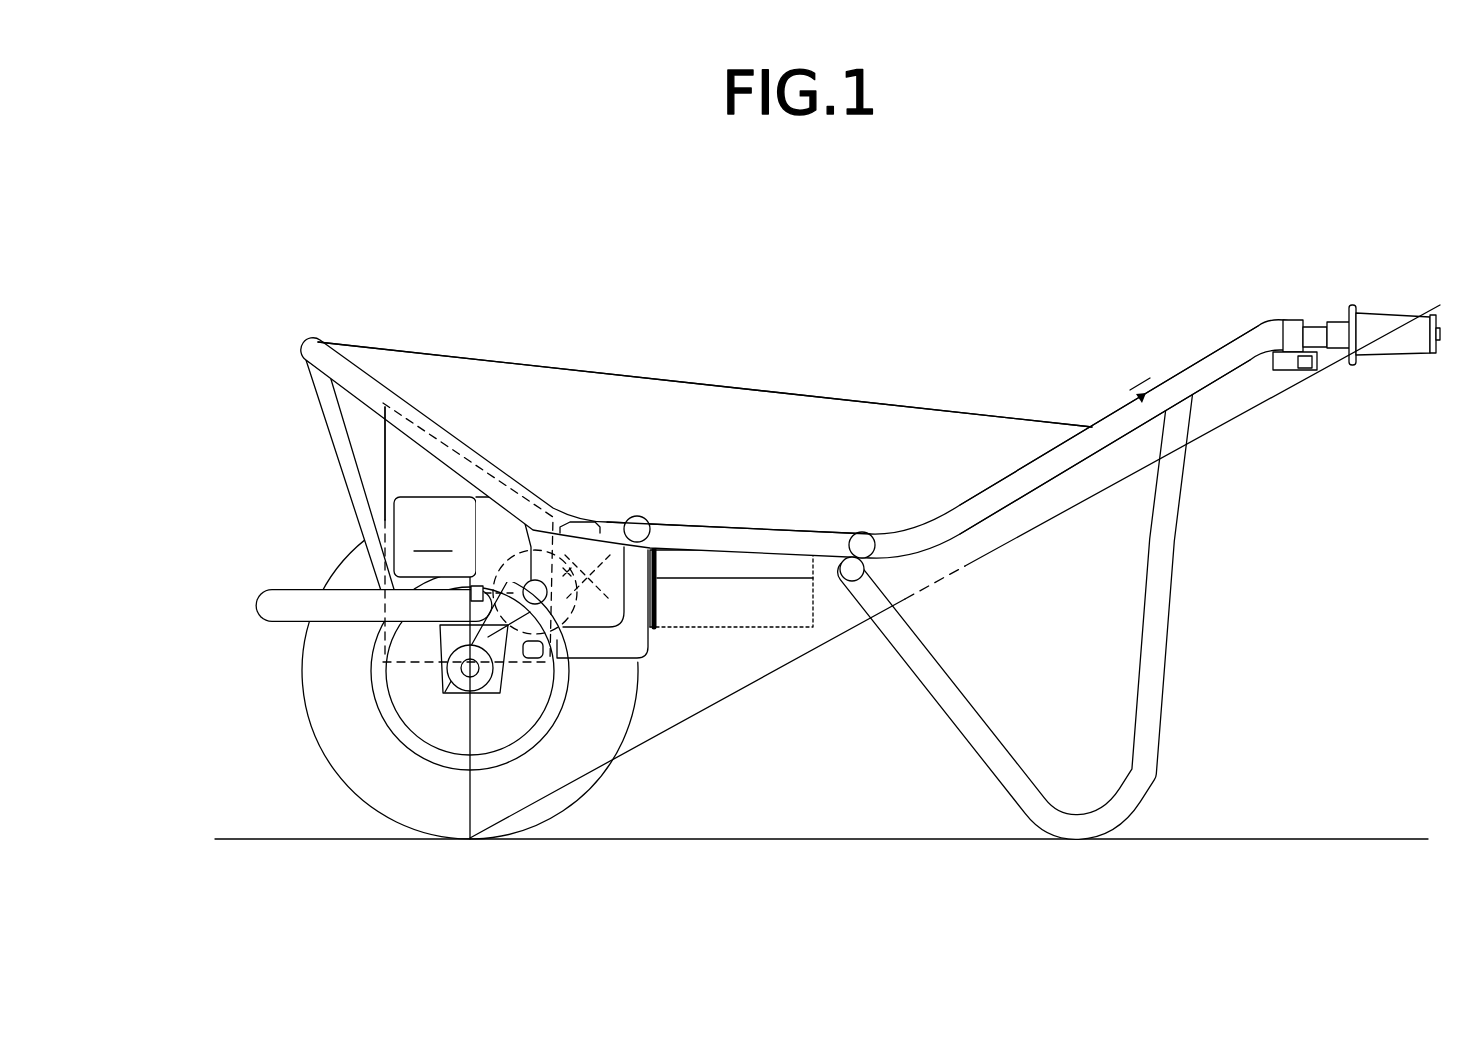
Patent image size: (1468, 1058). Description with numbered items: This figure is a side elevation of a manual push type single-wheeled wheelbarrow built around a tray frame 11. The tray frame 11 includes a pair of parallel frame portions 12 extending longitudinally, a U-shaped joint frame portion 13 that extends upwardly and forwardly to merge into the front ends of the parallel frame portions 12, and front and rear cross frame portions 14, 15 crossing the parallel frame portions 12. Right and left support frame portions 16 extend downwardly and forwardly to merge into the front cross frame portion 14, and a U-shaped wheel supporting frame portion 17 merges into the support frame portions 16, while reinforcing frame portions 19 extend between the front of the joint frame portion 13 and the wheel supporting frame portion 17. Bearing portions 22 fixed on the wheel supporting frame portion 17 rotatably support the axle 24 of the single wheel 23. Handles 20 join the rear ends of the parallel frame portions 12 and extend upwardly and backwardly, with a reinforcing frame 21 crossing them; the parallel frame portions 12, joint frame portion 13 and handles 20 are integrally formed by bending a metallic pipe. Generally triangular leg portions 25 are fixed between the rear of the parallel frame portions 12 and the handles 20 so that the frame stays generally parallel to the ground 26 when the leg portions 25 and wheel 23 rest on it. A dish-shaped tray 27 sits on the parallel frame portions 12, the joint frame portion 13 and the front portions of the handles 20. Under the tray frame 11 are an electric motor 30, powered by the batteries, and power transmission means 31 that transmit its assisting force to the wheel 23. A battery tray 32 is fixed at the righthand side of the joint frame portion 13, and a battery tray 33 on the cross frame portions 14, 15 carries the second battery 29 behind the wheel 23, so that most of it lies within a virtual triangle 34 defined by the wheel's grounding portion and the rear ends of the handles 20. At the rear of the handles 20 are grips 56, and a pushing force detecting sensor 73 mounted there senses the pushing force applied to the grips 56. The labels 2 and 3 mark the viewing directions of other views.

The section view direction indicator for FIG. 2 is at (788, 312).
The section view direction indicator for FIG. 3 is at (206, 637).
The tray frame 11 is at (296, 337).
The parallel frame portions 12 is at (710, 532).
The joint frame portion 13 is at (351, 372).
The front cross frame portion 14 is at (641, 525).
The rear cross frame portion 15 is at (893, 548).
The support frame portions 16 is at (628, 640).
The wheel supporting frame portion 17 is at (280, 596).
The reinforcing frame portions 19 is at (328, 412).
The handles 20 is at (1177, 380).
The reinforcing frame 21 is at (1137, 392).
The bearing portions 22 is at (432, 746).
The wheel 23 is at (415, 790).
The axle 24 is at (445, 676).
The leg portions 25 is at (1152, 710).
The ground 26 is at (298, 838).
The tray 27 is at (877, 400).
The second battery 29 is at (733, 560).
The electric motor 30 is at (502, 565).
The power transmission means 31 is at (522, 688).
The battery tray 32 is at (430, 470).
The battery tray 33 is at (787, 607).
The virtual triangle 34 is at (1080, 507).
The grips 56 is at (1375, 323).
The pushing force detecting sensor 73 is at (1282, 380).